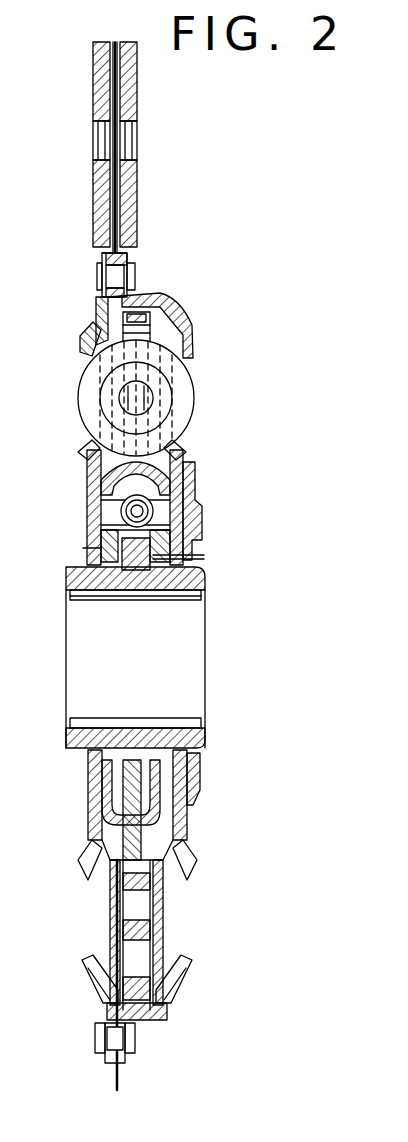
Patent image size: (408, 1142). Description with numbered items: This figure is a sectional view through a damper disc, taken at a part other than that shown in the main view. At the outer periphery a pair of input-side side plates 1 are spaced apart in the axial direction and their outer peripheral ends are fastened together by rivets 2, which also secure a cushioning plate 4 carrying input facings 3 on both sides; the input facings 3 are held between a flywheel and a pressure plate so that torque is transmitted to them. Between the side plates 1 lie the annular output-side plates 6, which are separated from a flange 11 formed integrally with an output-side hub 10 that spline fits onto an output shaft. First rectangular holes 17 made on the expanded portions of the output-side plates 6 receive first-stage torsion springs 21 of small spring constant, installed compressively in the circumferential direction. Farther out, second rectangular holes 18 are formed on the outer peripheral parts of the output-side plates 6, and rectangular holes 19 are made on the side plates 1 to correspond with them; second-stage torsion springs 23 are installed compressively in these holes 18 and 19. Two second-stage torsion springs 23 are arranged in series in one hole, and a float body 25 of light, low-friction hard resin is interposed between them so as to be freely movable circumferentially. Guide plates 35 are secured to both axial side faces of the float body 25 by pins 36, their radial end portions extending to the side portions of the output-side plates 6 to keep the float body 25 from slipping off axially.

The input-side side plate 1 is at (87, 470).
The rivet 2 is at (103, 277).
The input facing 3 is at (108, 100).
The cushioning plate 4 is at (108, 185).
The output-side plate 6 is at (188, 486).
The output-side hub 10 is at (93, 596).
The flange 11 is at (146, 596).
The first rectangular hole 17 is at (96, 544).
The second rectangular hole 18 is at (120, 333).
The rectangular hole 19 is at (93, 345).
The first-stage torsion spring 21 is at (121, 512).
The second-stage torsion spring 23 is at (180, 380).
The float body 25 is at (122, 930).
The guide plate 35 is at (110, 887).
The pin 36 is at (142, 958).